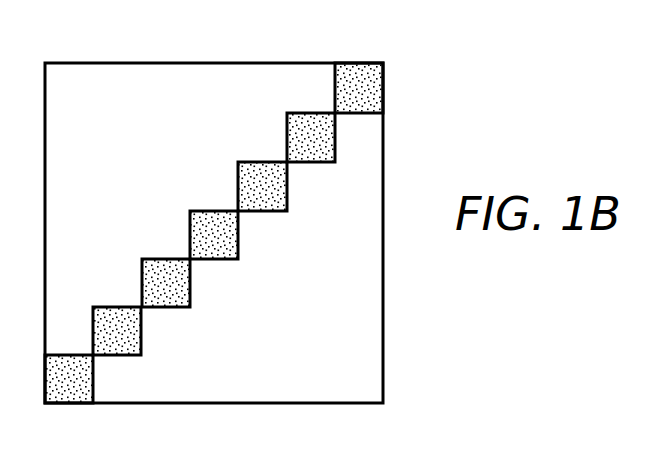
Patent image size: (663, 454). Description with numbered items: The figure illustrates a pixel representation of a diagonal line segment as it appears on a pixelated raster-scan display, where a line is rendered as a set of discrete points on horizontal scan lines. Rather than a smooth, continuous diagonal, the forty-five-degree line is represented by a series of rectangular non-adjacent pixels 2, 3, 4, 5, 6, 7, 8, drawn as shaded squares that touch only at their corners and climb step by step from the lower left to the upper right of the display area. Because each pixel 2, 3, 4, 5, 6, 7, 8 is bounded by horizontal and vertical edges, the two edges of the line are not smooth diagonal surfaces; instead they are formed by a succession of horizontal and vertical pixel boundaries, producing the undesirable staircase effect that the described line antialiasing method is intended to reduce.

The pixel 2 is at (70, 403).
The pixel 3 is at (141, 336).
The pixel 4 is at (190, 289).
The pixel 5 is at (238, 240).
The pixel 6 is at (287, 190).
The pixel 7 is at (335, 140).
The pixel 8 is at (362, 63).